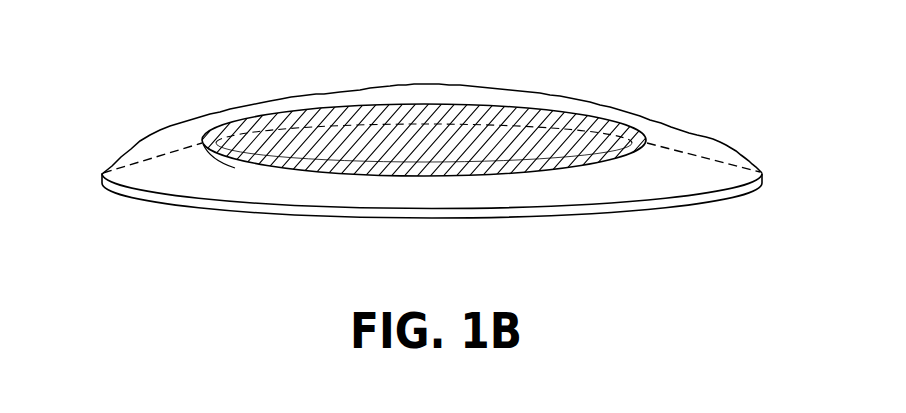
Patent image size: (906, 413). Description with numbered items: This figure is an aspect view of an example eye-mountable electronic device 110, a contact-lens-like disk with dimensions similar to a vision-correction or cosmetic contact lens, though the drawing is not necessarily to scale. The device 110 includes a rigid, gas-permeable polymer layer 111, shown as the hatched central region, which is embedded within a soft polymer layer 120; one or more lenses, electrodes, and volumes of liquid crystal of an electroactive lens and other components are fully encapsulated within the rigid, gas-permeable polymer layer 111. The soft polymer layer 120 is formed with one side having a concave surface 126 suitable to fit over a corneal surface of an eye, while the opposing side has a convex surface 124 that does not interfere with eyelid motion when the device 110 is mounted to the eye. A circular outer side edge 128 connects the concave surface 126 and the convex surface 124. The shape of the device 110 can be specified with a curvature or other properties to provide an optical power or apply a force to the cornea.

The eye-mountable electronic device 110 is at (129, 52).
The rigid, gas-permeable polymer layer 111 is at (318, 98).
The soft polymer layer 120 is at (187, 216).
The convex surface 124 is at (675, 120).
The concave surface 126 is at (686, 190).
The circular outer side edge 128 is at (582, 212).